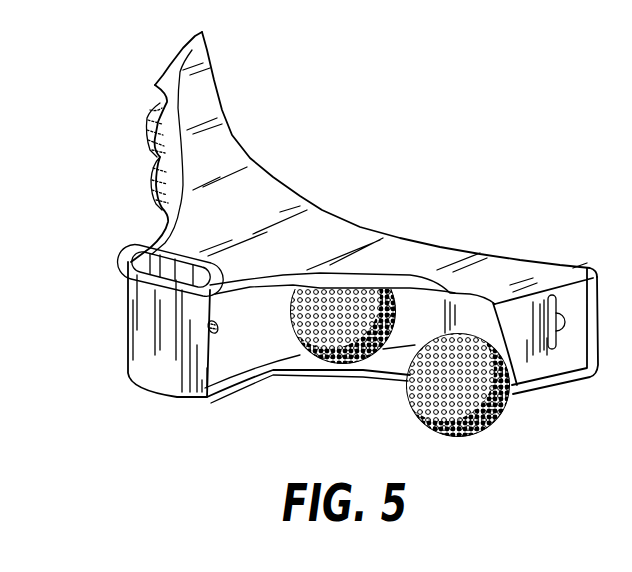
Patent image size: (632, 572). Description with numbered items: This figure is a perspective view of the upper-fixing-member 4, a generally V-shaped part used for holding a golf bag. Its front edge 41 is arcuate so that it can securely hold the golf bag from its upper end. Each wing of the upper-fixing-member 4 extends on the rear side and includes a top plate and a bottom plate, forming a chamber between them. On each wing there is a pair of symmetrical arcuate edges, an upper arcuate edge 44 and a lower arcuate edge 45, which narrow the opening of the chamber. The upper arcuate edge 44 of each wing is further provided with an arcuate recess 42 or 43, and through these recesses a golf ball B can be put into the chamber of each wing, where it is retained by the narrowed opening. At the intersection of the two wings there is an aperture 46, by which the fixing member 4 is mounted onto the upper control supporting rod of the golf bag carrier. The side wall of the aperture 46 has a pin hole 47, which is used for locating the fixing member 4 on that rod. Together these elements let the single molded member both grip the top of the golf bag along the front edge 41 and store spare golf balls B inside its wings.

The upper-fixing-member 4 is at (326, 249).
The front edge 41 is at (420, 242).
The arcuate recess 42 is at (158, 100).
The arcuate recess 43 is at (493, 312).
The upper arcuate edge 44 is at (288, 294).
The lower arcuate edge 45 is at (337, 377).
The aperture 46 is at (135, 260).
The pin hole 47 is at (208, 332).
The golf ball B is at (477, 437).